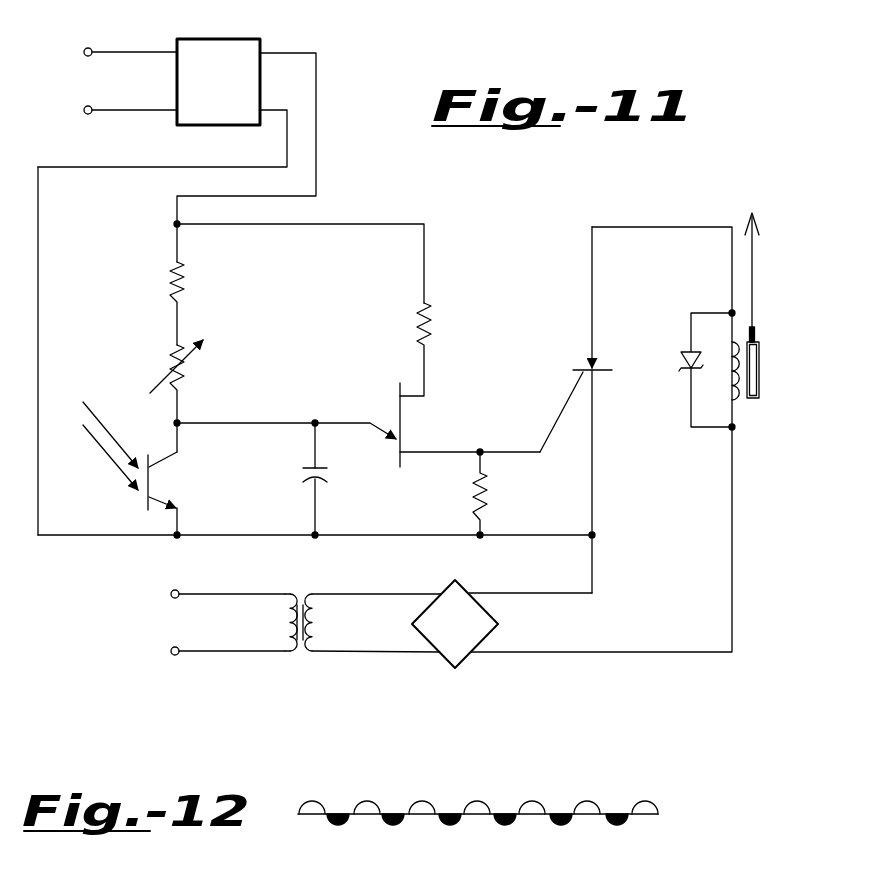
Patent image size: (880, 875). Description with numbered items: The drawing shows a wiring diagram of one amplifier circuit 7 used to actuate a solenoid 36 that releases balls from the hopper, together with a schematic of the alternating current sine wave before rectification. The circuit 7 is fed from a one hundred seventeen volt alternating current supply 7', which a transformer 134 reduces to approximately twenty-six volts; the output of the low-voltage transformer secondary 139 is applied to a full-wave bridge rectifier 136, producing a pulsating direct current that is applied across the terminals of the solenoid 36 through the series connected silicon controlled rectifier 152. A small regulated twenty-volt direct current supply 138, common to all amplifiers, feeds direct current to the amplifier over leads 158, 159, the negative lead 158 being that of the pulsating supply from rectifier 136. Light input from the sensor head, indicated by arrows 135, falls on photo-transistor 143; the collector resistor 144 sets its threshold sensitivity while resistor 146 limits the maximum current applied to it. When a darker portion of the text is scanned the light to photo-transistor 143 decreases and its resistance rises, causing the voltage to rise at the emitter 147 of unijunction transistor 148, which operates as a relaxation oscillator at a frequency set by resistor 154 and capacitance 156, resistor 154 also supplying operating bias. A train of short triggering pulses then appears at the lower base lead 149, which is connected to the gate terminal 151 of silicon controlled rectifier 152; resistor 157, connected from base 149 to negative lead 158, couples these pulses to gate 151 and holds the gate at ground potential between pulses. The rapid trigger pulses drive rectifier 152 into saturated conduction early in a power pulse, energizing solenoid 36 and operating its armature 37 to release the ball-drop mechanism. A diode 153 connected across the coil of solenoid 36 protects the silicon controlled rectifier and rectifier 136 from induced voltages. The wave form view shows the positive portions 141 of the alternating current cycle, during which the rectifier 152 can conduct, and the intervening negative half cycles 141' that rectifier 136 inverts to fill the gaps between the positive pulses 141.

In FIG. 11, the regulated direct current supply 138 is at (245, 38).
In FIG. 11, the alternating current supply 7' is at (122, 351).
In FIG. 11, the amplifier circuit 7 is at (63, 333).
In FIG. 11, the negative lead 158 is at (284, 132).
In FIG. 11, the lead 159 is at (316, 143).
In FIG. 11, the resistor 146 is at (170, 284).
In FIG. 11, the collector resistor 144 is at (172, 363).
In FIG. 11, the photo-transistor 143 is at (162, 453).
In FIG. 11, the arrows 135 is at (112, 464).
In FIG. 11, the resistor 154 is at (432, 318).
In FIG. 11, the emitter 147 is at (394, 432).
In FIG. 11, the unijunction transistor 148 is at (404, 425).
In FIG. 11, the lower base lead 149 is at (394, 453).
In FIG. 11, the capacitance 156 is at (302, 474).
In FIG. 11, the resistor 157 is at (474, 497).
In FIG. 11, the silicon controlled rectifier 152 is at (602, 363).
In FIG. 11, the gate terminal 151 is at (576, 370).
In FIG. 11, the diode 153 is at (684, 360).
In FIG. 11, the solenoid 36 is at (760, 368).
In FIG. 11, the armature 37 is at (757, 340).
In FIG. 11, the transformer 134 is at (299, 648).
In FIG. 11, the transformer secondary 139 is at (318, 630).
In FIG. 11, the rectifier 136 is at (456, 655).
In FIG. 12, the positive portion 141 is at (478, 784).
In FIG. 12, the recessed dots 141' is at (477, 842).